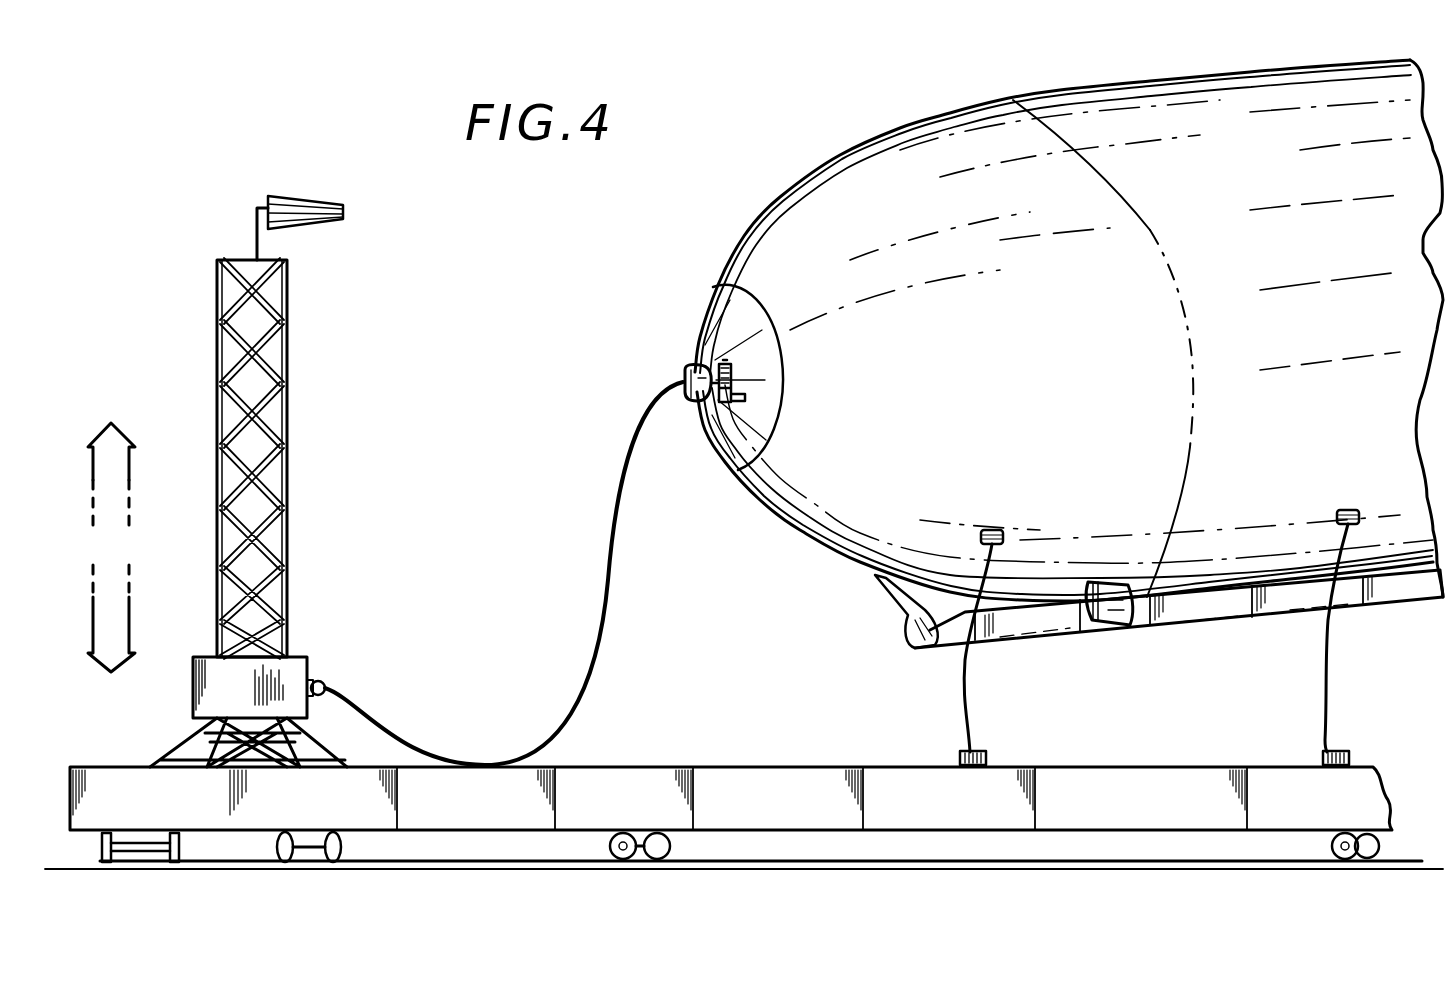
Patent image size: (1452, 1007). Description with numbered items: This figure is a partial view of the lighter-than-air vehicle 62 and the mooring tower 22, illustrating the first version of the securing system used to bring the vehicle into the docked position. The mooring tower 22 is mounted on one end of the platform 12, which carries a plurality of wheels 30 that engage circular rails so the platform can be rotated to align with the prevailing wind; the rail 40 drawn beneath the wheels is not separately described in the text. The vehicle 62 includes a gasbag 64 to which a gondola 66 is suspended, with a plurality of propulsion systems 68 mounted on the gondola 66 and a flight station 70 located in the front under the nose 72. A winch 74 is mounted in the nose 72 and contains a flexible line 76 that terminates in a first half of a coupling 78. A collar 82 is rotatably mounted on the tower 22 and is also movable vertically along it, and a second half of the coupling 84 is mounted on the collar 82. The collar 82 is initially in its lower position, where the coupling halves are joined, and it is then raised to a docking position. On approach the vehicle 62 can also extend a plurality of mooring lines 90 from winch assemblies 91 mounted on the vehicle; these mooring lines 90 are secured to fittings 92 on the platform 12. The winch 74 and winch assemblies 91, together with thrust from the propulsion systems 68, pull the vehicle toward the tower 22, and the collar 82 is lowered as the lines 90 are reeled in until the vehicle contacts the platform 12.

The platform 12 is at (668, 765).
The mooring tower 22 is at (290, 287).
The wheels 30 is at (185, 847).
The rail track 40 is at (868, 860).
The lighter-than-air vehicle 62 is at (912, 112).
The gasbag 64 is at (1105, 93).
The gondola 66 is at (1277, 617).
The propulsion systems 68 is at (1112, 622).
The flight station 70 is at (907, 640).
The nose 72 is at (692, 365).
The winch 74 is at (714, 406).
The flexible line 76 is at (608, 600).
The first half of a coupling 78 is at (325, 684).
The collar 82 is at (193, 690).
The second half of the coupling 84 is at (321, 681).
The mooring lines 90 is at (965, 710).
The winch assemblies 91 is at (992, 530).
The fittings 92 is at (988, 752).